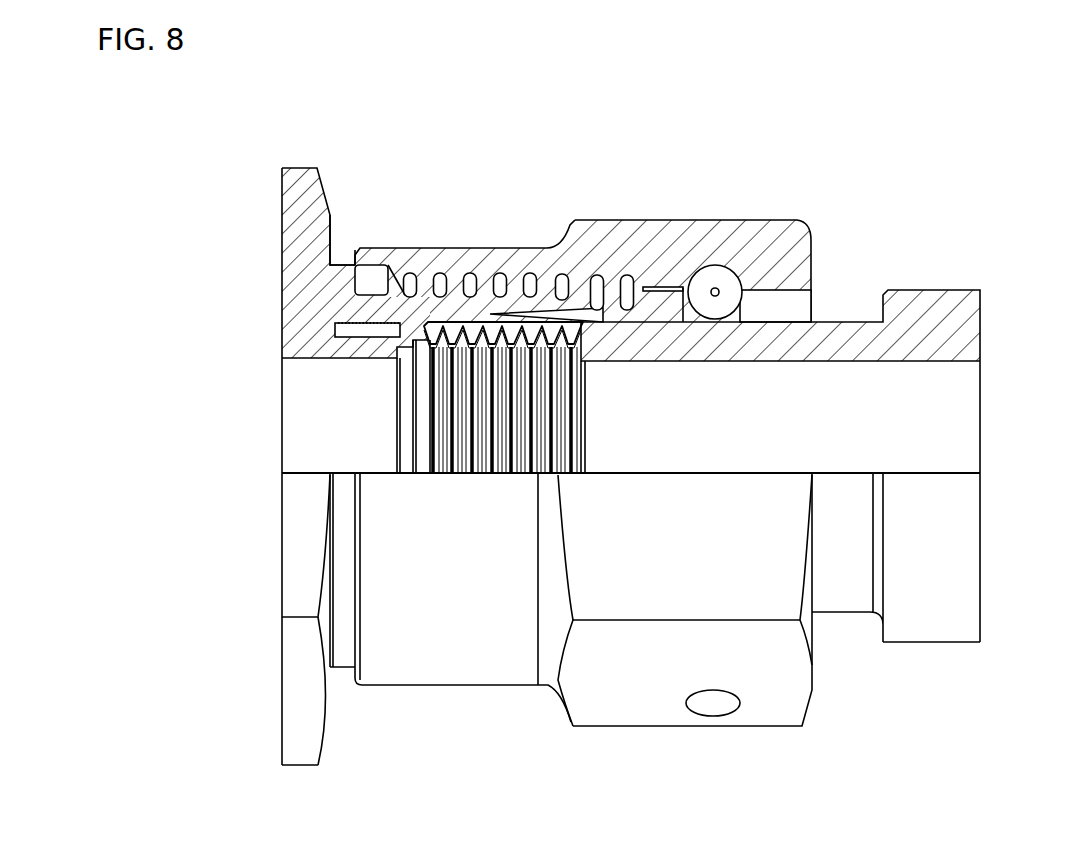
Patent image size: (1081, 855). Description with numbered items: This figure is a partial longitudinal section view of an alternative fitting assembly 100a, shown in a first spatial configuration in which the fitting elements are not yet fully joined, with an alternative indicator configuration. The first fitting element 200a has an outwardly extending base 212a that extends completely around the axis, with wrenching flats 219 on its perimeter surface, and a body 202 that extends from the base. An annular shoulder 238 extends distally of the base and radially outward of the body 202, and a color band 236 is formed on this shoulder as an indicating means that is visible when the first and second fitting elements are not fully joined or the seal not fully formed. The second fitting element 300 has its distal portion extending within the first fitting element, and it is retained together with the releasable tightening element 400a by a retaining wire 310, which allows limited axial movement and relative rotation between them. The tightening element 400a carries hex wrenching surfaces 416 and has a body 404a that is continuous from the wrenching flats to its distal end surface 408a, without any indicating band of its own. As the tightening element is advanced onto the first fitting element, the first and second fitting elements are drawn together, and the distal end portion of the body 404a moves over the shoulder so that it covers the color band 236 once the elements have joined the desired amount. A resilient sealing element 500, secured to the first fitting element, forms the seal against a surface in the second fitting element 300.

The fitting assembly 100a is at (298, 136).
The first fitting element 200a is at (265, 183).
The base 212a is at (297, 230).
The annular shoulder 238 is at (342, 278).
The color band 236 is at (342, 258).
The wrenching flats 219 is at (300, 683).
The body 404a is at (475, 245).
The distal end surface 408a is at (375, 243).
The body 202 is at (438, 312).
The releasable tightening element 400a is at (606, 216).
The hex wrenching surfaces 416 is at (765, 677).
The retaining wire 310 is at (720, 282).
The second fitting element 300 is at (928, 256).
The resilient sealing element 500 is at (408, 416).